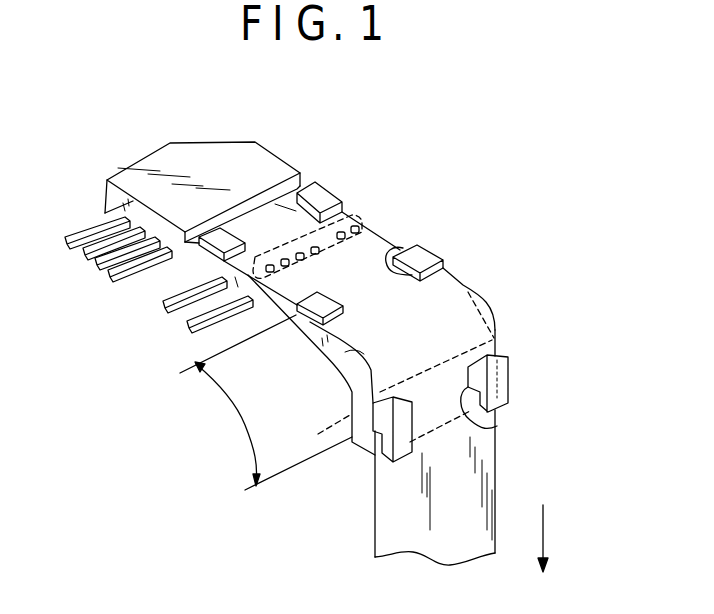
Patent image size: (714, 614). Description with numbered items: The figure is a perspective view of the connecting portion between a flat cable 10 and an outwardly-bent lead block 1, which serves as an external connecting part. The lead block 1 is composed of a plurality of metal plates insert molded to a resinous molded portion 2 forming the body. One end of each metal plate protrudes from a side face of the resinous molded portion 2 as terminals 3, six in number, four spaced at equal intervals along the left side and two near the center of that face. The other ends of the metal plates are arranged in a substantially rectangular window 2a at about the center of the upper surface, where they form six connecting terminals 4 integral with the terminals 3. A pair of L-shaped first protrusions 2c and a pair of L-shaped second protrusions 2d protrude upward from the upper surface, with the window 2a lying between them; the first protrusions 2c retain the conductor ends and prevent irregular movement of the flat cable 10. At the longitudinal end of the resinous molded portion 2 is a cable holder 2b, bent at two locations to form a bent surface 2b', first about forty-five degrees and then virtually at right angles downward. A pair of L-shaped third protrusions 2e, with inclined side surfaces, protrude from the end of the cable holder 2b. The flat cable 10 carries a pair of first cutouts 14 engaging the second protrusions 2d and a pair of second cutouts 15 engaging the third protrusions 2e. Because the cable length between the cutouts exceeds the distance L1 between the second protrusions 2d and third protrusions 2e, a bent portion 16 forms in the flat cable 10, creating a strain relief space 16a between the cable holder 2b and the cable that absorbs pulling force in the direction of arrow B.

The outwardly-bent lead block 1 is at (218, 133).
The resinous molded portion 2 is at (292, 155).
The window 2a is at (368, 223).
The cable holder 2b is at (341, 420).
The bent surface 2b' is at (302, 439).
The first protrusions 2c is at (222, 241).
The second protrusions 2d is at (428, 258).
The third protrusions 2e is at (507, 380).
The terminals 3 is at (72, 243).
The connecting terminals 4 is at (352, 211).
The flat cable 10 is at (387, 515).
The first cutouts 14 is at (397, 246).
The second cutouts 15 is at (497, 426).
The bent portion 16 is at (490, 305).
The space (strain relief portion) 16a is at (356, 360).
The distance between the second protrusions and the third protrusions L1 is at (240, 422).
The arrow B is at (543, 555).